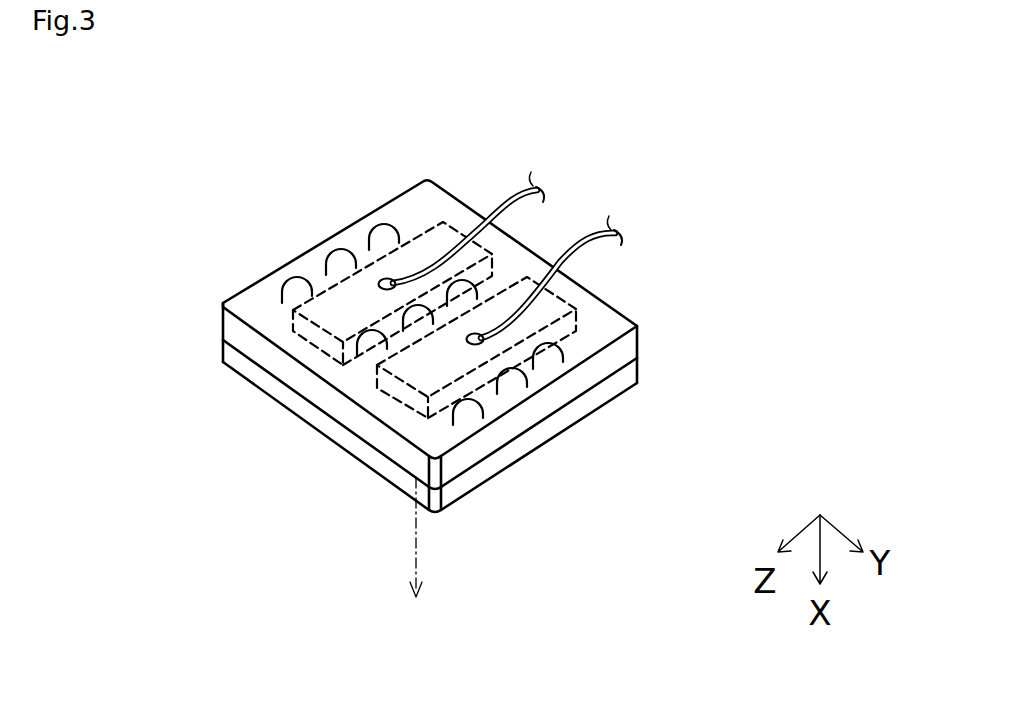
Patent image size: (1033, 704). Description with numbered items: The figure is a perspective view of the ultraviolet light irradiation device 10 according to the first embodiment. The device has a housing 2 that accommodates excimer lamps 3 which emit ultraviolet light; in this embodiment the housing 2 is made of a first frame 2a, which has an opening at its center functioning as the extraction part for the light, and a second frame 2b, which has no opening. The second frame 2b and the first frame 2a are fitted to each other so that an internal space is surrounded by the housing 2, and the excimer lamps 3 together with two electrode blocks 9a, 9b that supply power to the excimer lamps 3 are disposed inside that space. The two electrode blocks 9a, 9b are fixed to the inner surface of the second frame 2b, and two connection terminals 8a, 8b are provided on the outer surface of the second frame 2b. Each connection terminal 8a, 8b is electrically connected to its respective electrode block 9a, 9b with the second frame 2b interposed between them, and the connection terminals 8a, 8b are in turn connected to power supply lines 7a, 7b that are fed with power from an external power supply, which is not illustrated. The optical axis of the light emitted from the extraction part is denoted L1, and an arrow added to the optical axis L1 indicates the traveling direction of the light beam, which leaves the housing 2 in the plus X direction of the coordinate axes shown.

The housing 2 is at (521, 346).
The first frame 2a is at (623, 380).
The second frame 2b is at (623, 352).
The excimer lamp 3 is at (290, 300).
The power supply line 7a is at (486, 214).
The power supply line 7b is at (593, 229).
The connection terminal 8a is at (387, 278).
The connection terminal 8b is at (484, 338).
The electrode block 9a is at (321, 329).
The electrode block 9b is at (397, 383).
The ultraviolet light irradiation device 10 is at (667, 178).
The optical axis L1 is at (420, 548).